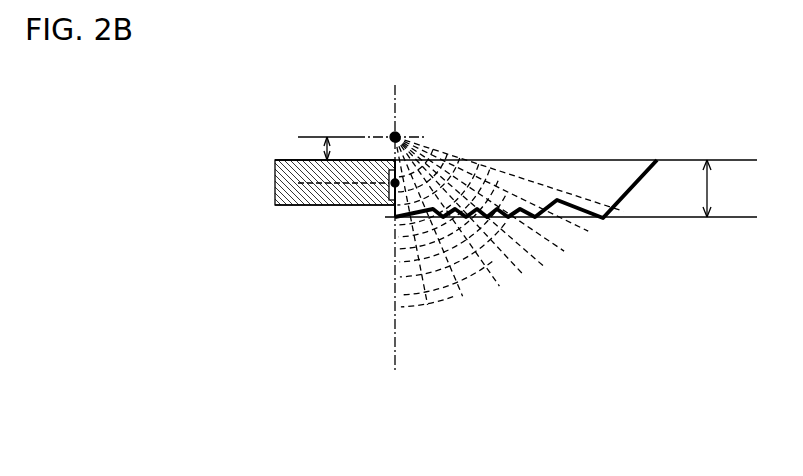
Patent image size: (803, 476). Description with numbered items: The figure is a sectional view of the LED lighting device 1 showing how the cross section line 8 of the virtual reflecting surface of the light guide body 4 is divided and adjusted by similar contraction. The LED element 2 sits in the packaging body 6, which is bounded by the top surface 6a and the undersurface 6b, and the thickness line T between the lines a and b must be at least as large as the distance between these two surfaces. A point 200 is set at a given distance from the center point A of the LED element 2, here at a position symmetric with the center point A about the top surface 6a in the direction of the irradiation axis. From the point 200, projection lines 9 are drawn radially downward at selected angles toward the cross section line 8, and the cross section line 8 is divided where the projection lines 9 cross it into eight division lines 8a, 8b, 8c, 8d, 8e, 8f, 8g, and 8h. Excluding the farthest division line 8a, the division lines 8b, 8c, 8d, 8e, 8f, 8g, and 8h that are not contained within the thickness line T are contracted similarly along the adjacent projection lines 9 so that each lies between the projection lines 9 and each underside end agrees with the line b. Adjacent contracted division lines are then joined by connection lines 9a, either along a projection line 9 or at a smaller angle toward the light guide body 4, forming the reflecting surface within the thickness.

The LED lighting device 1 is at (230, 52).
The LED element 2 is at (391, 196).
The light guide body 4 is at (635, 170).
The packaging body 6 is at (275, 182).
The top surface 6a is at (293, 160).
The undersurface 6b is at (290, 205).
The cross section line 8 is at (556, 267).
The division line 8a is at (622, 202).
The division line 8b is at (590, 233).
The division line 8c is at (566, 251).
The division line 8d is at (545, 266).
The division line 8e is at (523, 274).
The division line 8f is at (499, 287).
The division line 8g is at (463, 297).
The division line 8h is at (434, 249).
The projection line 9 is at (472, 277).
The connection line 9a is at (420, 214).
The point 200 is at (395, 137).
The center point A is at (392, 184).